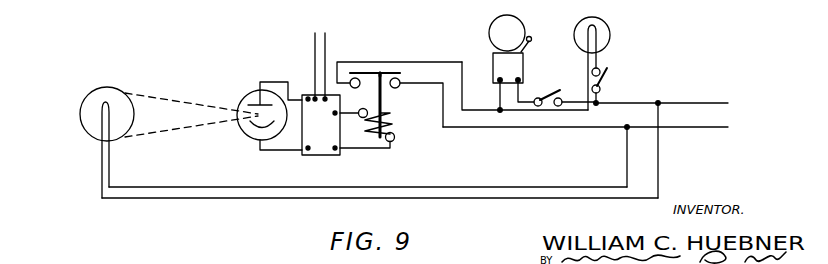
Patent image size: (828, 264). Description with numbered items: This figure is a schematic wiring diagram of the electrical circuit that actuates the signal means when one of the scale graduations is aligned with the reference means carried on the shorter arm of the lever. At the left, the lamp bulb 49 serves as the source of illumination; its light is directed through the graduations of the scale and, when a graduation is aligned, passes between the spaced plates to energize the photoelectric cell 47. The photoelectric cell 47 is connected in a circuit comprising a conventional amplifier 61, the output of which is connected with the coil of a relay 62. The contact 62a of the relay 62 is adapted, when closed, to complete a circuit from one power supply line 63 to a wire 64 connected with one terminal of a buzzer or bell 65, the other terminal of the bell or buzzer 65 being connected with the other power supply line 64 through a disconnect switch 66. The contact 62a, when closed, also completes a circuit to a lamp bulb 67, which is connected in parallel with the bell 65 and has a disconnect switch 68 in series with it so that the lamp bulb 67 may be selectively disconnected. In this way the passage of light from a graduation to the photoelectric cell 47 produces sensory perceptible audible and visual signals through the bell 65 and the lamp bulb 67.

The photoelectric cell 47 is at (240, 103).
The lamp bulb 49 is at (88, 120).
The amplifier 61 is at (323, 148).
The relay 62 is at (394, 135).
The relay contact 62a is at (380, 72).
The power supply line 63 is at (722, 128).
The wire 64 is at (497, 106).
The buzzer or bell 65 is at (517, 70).
The disconnect switch 66 is at (545, 96).
The lamp bulb 67 is at (608, 40).
The disconnect switch 68 is at (603, 82).